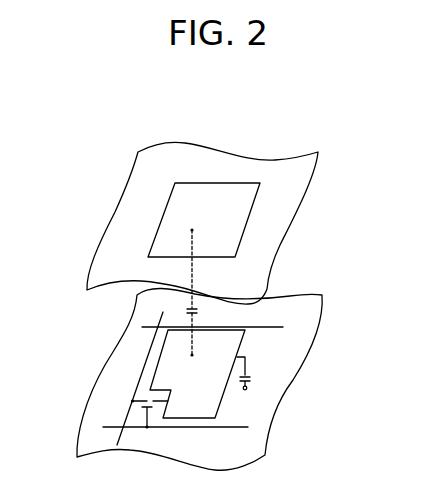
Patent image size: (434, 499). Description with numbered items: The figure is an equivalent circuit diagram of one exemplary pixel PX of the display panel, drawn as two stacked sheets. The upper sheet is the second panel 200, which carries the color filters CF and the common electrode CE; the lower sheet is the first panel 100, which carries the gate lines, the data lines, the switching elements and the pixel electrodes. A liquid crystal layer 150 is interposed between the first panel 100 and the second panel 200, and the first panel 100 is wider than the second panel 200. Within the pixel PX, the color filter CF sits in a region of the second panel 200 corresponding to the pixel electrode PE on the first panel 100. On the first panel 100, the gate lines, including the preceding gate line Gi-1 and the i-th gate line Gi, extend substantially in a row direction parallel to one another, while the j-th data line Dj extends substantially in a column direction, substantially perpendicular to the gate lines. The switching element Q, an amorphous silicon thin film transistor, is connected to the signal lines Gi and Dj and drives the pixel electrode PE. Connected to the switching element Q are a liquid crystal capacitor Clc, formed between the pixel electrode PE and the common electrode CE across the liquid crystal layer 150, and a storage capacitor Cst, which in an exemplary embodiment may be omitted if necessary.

The pixel PX is at (305, 121).
The second panel 200 is at (285, 240).
The color filter CF is at (260, 192).
The common electrode CE is at (273, 263).
The liquid crystal layer 150 is at (121, 307).
The first panel 100 is at (318, 350).
The (i-1)-th gate line Gi-1 is at (227, 327).
The i-th gate line Gi is at (184, 428).
The j-th data line Dj is at (145, 370).
The pixel electrode PE is at (225, 395).
The liquid crystal capacitor Clc is at (203, 331).
The storage capacitor Cst is at (253, 373).
The switching element Q is at (149, 413).